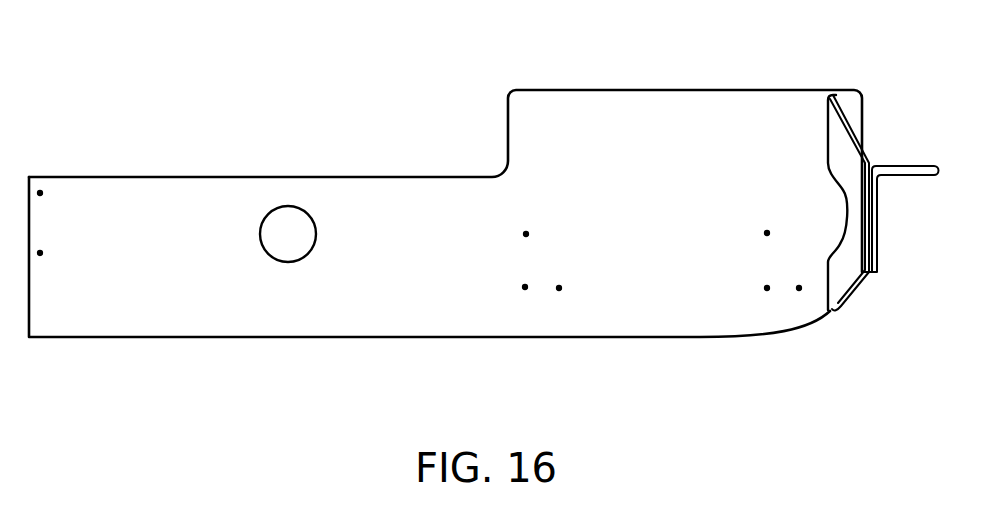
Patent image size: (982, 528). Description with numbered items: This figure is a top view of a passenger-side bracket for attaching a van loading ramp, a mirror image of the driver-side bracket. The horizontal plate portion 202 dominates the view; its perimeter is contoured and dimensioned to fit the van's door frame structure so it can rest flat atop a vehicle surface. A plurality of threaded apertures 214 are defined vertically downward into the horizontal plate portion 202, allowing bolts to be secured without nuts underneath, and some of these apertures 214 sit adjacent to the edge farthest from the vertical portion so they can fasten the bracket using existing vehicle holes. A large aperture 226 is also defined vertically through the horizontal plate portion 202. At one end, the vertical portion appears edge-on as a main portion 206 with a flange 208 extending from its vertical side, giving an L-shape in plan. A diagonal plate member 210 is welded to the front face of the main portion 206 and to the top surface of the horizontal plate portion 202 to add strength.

The horizontal plate portion 202 is at (362, 283).
The main portion 206 is at (877, 232).
The flange 208 is at (902, 162).
The diagonal plate member 210 is at (835, 152).
The threaded apertures 214 is at (40, 193).
The large aperture 226 is at (290, 226).